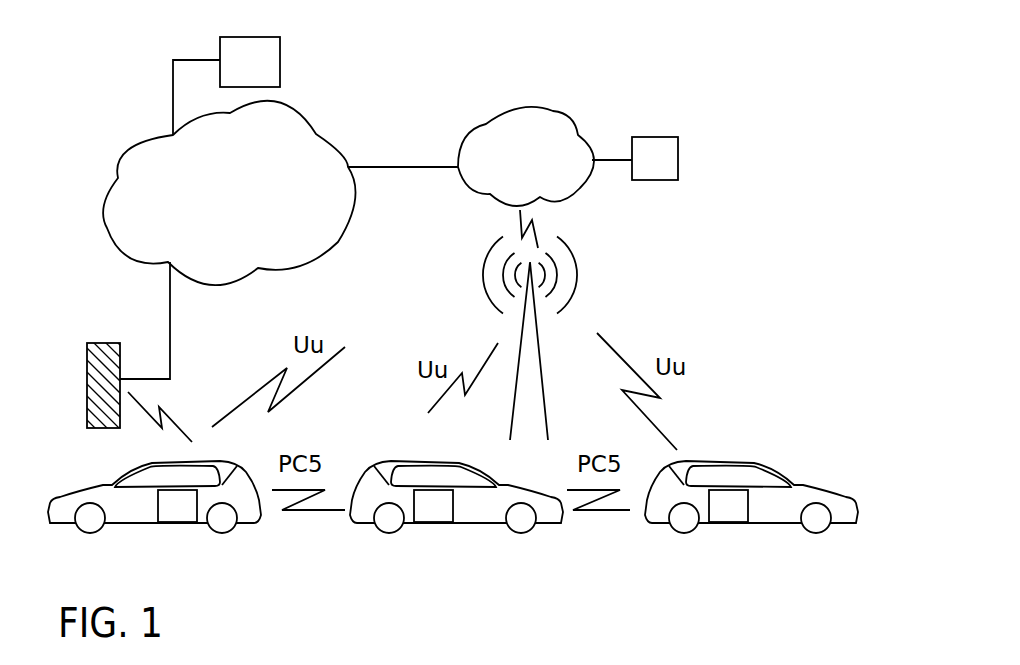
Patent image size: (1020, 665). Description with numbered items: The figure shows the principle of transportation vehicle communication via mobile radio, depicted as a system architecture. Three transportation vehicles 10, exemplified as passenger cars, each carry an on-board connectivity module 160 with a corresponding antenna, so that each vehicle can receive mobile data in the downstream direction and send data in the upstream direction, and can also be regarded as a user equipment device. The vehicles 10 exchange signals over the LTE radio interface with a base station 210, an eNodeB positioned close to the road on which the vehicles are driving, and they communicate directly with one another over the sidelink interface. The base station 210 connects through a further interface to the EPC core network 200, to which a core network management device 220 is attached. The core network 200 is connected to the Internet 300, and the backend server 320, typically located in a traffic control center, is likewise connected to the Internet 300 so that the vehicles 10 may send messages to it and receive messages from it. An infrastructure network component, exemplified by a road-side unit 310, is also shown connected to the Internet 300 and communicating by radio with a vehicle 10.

The transportation vehicle 10 is at (140, 510).
The on-board connectivity module 160 is at (185, 520).
The EPC core network 200 is at (542, 125).
The base station 210 is at (536, 328).
The core network management device 220 is at (678, 150).
The Internet 300 is at (292, 158).
The road-side unit 310 is at (108, 343).
The backend server 320 is at (278, 52).